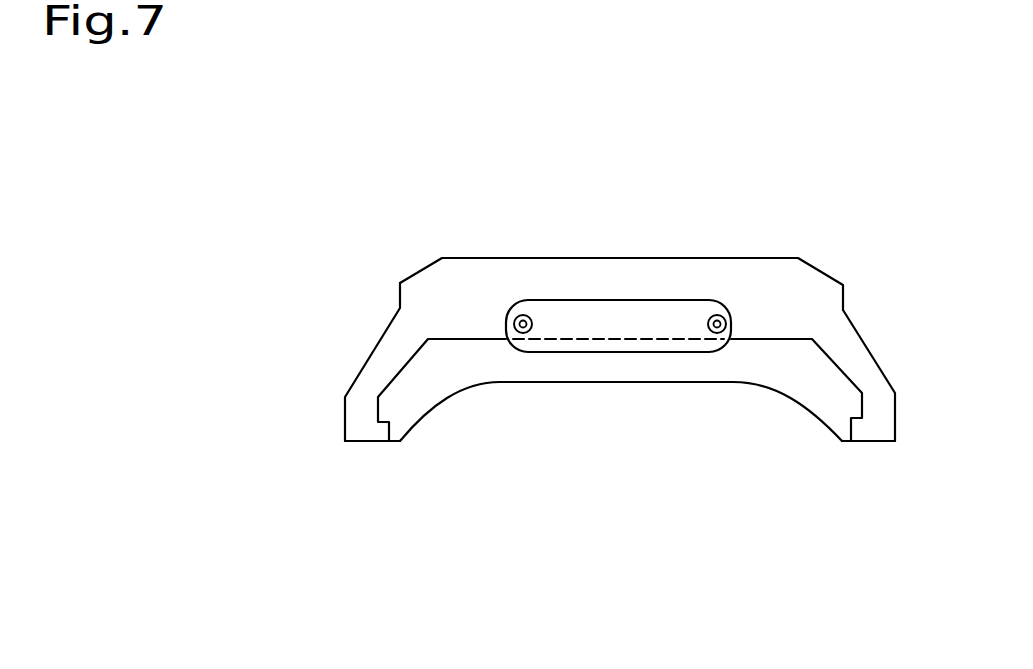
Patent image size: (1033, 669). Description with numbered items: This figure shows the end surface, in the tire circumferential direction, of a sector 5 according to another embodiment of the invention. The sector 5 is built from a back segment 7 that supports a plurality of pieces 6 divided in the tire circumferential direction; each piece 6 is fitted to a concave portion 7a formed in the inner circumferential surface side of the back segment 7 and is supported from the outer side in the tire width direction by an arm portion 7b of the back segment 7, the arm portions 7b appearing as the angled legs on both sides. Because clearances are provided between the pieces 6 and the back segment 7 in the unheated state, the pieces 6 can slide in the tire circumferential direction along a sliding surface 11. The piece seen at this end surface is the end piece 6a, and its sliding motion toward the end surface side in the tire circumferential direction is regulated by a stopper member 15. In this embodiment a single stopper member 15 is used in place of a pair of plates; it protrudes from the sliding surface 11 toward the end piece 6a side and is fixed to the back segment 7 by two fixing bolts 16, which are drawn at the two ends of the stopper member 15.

The sector 5 is at (452, 437).
The piece 6 is at (621, 407).
The end piece 6a is at (653, 373).
The back segment 7 is at (453, 272).
The concave portion 7a is at (758, 338).
The arm portion 7b is at (370, 383).
The sliding surface 11 is at (488, 343).
The stopper member 15 is at (638, 308).
The fixing bolt 16 is at (523, 318).